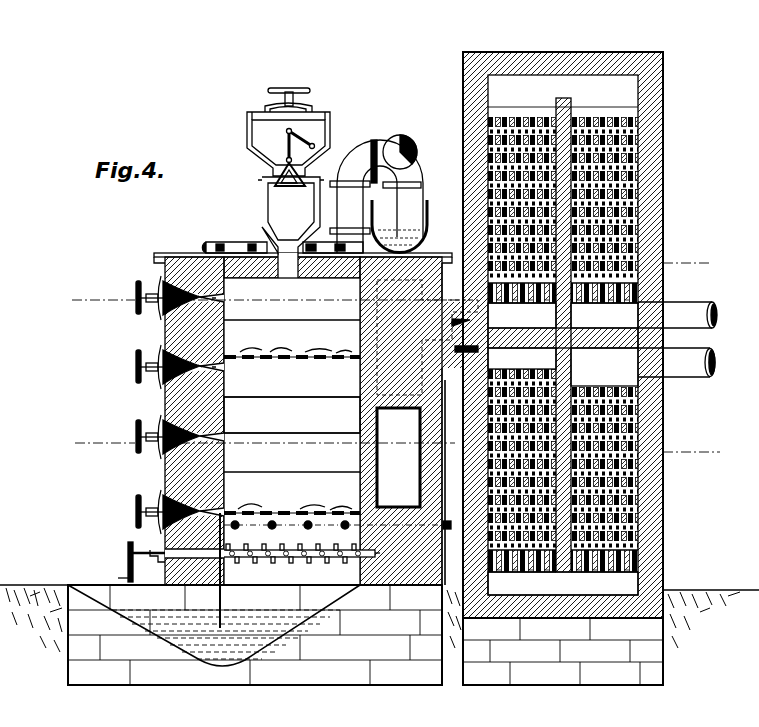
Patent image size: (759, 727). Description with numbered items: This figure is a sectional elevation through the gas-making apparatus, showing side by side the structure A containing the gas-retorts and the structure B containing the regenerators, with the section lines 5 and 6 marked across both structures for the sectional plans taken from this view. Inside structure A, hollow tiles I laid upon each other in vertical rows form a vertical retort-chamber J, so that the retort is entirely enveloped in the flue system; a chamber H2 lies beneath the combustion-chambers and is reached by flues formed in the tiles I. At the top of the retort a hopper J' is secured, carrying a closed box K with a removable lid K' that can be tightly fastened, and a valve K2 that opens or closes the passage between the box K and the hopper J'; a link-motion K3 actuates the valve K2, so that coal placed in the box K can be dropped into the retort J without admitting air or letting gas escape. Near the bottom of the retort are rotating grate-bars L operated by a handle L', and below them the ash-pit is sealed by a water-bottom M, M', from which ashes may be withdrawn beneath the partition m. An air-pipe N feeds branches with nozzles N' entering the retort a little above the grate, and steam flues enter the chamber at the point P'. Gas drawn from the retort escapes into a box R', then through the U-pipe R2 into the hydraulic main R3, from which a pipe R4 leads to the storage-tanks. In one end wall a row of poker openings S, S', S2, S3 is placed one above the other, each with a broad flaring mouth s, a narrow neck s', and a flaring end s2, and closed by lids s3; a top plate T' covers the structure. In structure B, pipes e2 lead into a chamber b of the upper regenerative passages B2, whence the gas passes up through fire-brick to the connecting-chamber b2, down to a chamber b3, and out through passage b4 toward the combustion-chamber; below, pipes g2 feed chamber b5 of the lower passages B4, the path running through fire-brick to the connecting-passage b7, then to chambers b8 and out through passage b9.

The structure containing the gas-retorts A is at (273, 411).
The structure containing the regenerators B is at (584, 324).
The regenerative passages B2 is at (640, 152).
The regenerative passages B4 is at (640, 437).
The chamber b is at (604, 315).
The connecting-chamber b2 is at (567, 327).
The chamber b3 is at (522, 315).
The passage b4 is at (475, 322).
The chamber b5 is at (604, 367).
The connecting-passage b7 is at (563, 583).
The chambers b8 is at (522, 359).
The passage b9 is at (478, 350).
The pipes e2 is at (677, 315).
The pipes g2 is at (676, 362).
The chamber H2 is at (398, 457).
The hollow tiles I is at (292, 407).
The retort-chambers J is at (292, 415).
The hopper J' is at (291, 215).
The closed box K is at (297, 137).
The removable lid K' is at (296, 100).
The valve K2 is at (293, 169).
The link-motion K3 is at (292, 146).
The grate-bars L is at (272, 564).
The handle L' is at (133, 562).
The water-bottom M is at (226, 634).
The water-bottom M' is at (255, 635).
The partition m is at (228, 597).
The air-pipe N is at (450, 482).
The nozzles N' is at (334, 533).
The point of entry of steam-flues P' is at (292, 503).
The box R' is at (282, 240).
The U-pipe R2 is at (384, 194).
The hydraulic main R3 is at (428, 216).
The pipe R4 is at (411, 152).
The opening S is at (180, 305).
The opening S' is at (180, 375).
The opening S2 is at (180, 445).
The opening S3 is at (180, 522).
The broad flaring mouth s is at (167, 337).
The narrow neck s' is at (195, 334).
The flaring end s2 is at (211, 330).
The lids s3 is at (154, 403).
The top plate T' is at (303, 276).
The section line 5 5 is at (397, 447).
The section line 6 6 is at (390, 281).